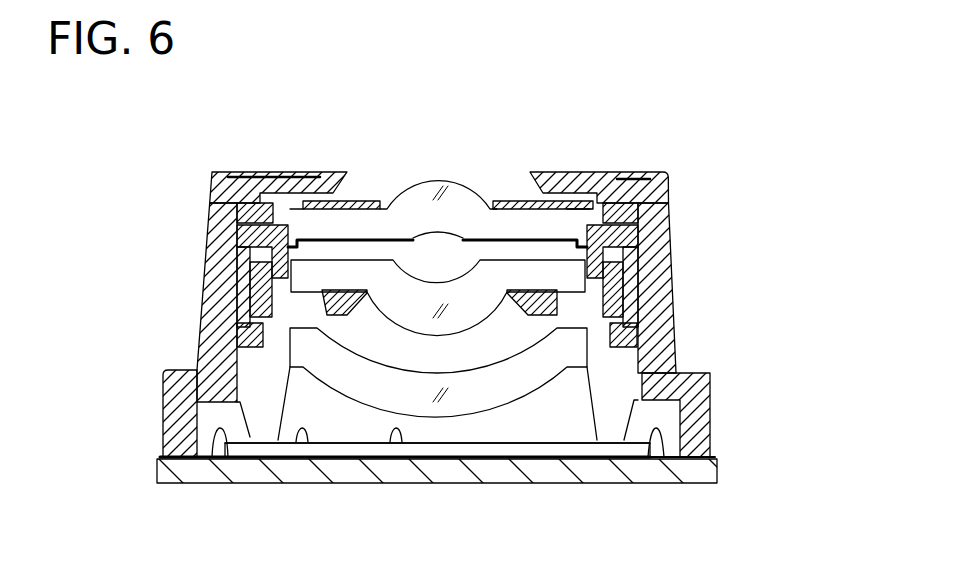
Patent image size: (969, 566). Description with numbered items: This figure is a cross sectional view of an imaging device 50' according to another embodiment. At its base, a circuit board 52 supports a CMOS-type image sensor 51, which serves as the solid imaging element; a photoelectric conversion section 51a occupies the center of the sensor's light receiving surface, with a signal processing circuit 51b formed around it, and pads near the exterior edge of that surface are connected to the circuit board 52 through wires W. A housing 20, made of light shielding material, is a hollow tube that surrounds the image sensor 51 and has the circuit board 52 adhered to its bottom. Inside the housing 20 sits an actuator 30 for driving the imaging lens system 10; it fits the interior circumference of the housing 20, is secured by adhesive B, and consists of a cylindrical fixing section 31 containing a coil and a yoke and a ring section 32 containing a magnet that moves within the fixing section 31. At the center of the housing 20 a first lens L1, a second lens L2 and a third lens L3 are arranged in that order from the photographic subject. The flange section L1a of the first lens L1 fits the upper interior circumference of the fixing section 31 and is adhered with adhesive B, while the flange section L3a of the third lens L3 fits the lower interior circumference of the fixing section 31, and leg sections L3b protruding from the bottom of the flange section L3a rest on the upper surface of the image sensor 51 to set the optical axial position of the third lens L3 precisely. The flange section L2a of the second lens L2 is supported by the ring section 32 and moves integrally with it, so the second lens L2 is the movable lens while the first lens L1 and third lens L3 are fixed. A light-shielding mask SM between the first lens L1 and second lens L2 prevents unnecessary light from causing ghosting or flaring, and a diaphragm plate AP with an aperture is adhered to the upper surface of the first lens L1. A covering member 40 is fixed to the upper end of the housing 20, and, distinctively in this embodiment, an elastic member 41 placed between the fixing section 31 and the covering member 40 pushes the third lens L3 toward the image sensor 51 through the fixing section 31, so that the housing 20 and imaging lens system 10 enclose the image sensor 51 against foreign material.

The imaging lens system 10 is at (384, 168).
The housing 20 is at (678, 376).
The actuator 30 is at (652, 292).
The fixing section 31 is at (625, 257).
The ring section 32 is at (643, 337).
The covering member 40 is at (272, 172).
The elastic member 41 is at (640, 217).
The imaging device 50' is at (419, 309).
The image sensor 51 is at (522, 450).
The photoelectric conversion section 51a is at (388, 432).
The signal processing circuit 51b is at (296, 440).
The circuit board 52 is at (597, 472).
The diaphragm plate AP is at (497, 205).
The light-shielding mask SM is at (410, 238).
The first lens L1 is at (441, 178).
The flange section L1a is at (577, 243).
The second lens L2 is at (483, 308).
The flange section L2a is at (262, 268).
The third lens L3 is at (458, 400).
The flange section L3a is at (260, 372).
The leg section L3b is at (260, 418).
The wire W is at (215, 438).
The adhesive B is at (713, 455).